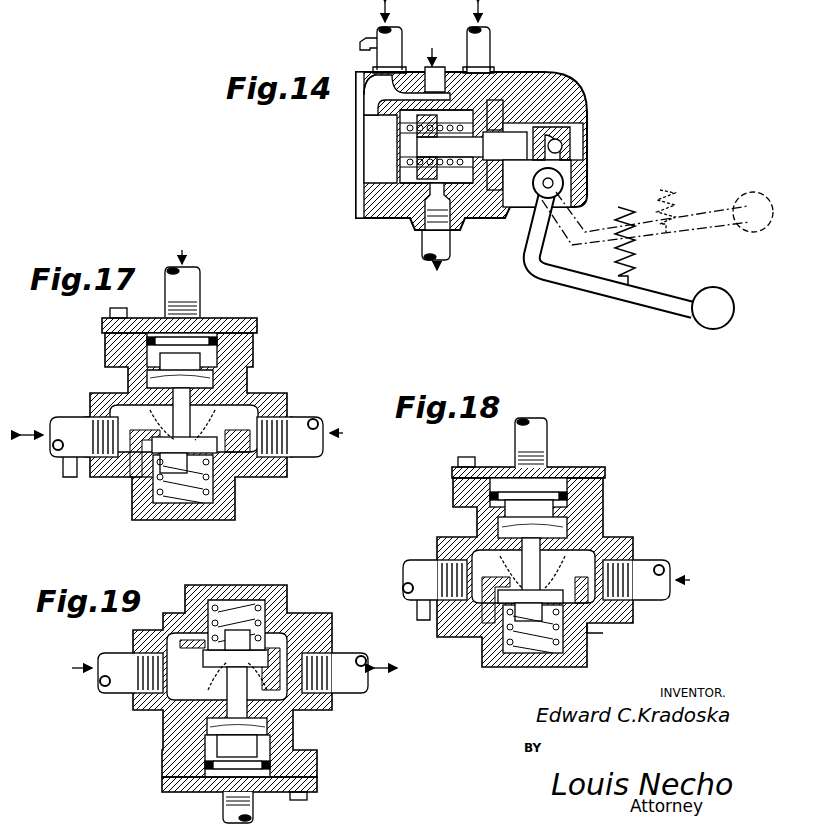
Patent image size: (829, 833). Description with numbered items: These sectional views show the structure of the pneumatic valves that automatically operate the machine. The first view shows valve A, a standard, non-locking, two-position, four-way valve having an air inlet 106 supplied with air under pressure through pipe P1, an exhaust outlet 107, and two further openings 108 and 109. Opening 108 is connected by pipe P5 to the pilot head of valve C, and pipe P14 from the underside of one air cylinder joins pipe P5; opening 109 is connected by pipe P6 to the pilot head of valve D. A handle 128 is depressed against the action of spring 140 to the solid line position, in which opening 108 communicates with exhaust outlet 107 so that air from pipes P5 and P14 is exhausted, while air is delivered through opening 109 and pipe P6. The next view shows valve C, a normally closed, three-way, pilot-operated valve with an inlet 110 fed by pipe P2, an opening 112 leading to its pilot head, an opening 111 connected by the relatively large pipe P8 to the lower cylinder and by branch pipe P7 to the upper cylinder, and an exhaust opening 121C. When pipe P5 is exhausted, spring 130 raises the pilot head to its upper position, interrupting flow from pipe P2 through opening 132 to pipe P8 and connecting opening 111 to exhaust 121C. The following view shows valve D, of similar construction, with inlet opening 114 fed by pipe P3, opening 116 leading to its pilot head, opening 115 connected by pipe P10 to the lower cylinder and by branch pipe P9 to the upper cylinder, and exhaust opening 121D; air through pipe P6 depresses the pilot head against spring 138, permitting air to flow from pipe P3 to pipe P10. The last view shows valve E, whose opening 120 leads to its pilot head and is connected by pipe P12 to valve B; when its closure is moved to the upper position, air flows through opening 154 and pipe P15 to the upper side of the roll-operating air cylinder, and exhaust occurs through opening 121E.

In FIG. 14, the air inlet 106 is at (392, 218).
In FIG. 14, the exhaust outlet 107 is at (442, 67).
In FIG. 14, the opening 108 is at (400, 80).
In FIG. 14, the opening 109 is at (478, 67).
In FIG. 14, the pipe P5 is at (396, 40).
In FIG. 17, the pipe P5 is at (195, 280).
In FIG. 14, the pipe P6 is at (490, 35).
In FIG. 18, the pipe P6 is at (545, 432).
In FIG. 14, the pipe P14 is at (368, 42).
In FIG. 14, the pipe P1 is at (447, 244).
In FIG. 14, the handle 128 is at (700, 232).
In FIG. 17, the handle 128 is at (218, 341).
In FIG. 14, the spring 140 is at (615, 215).
In FIG. 18, the spring 140 is at (605, 620).
In FIG. 17, the opening 112 is at (230, 322).
In FIG. 17, the opening 111 is at (112, 412).
In FIG. 17, the exhaust opening 121C is at (150, 405).
In FIG. 17, the inlet 110 is at (280, 420).
In FIG. 17, the pipe P8 is at (60, 420).
In FIG. 17, the branch pipe P7 is at (63, 470).
In FIG. 17, the pipe P2 is at (305, 450).
In FIG. 17, the opening 132 is at (145, 478).
In FIG. 17, the spring 130 is at (218, 490).
In FIG. 18, the opening 116 is at (562, 468).
In FIG. 18, the inlet opening 114 is at (612, 605).
In FIG. 18, the opening 115 is at (462, 620).
In FIG. 18, the exhaust opening 121D is at (590, 550).
In FIG. 18, the spring 138 is at (568, 645).
In FIG. 18, the pipe P3 is at (655, 560).
In FIG. 18, the pipe P10 is at (418, 565).
In FIG. 18, the branch pipe P9 is at (417, 612).
In FIG. 19, the opening 154 is at (150, 645).
In FIG. 19, the exhaust opening 121E is at (305, 708).
In FIG. 19, the opening 120 is at (215, 790).
In FIG. 19, the pipe P12 is at (253, 812).
In FIG. 19, the pipe P15 is at (355, 690).